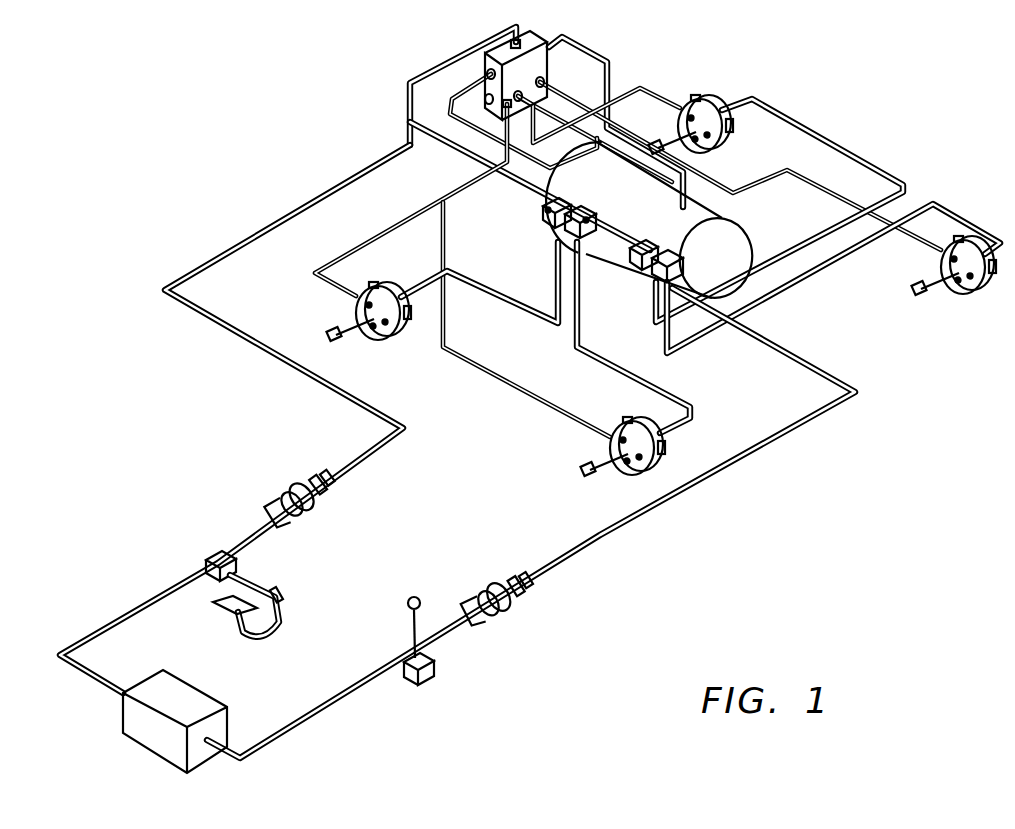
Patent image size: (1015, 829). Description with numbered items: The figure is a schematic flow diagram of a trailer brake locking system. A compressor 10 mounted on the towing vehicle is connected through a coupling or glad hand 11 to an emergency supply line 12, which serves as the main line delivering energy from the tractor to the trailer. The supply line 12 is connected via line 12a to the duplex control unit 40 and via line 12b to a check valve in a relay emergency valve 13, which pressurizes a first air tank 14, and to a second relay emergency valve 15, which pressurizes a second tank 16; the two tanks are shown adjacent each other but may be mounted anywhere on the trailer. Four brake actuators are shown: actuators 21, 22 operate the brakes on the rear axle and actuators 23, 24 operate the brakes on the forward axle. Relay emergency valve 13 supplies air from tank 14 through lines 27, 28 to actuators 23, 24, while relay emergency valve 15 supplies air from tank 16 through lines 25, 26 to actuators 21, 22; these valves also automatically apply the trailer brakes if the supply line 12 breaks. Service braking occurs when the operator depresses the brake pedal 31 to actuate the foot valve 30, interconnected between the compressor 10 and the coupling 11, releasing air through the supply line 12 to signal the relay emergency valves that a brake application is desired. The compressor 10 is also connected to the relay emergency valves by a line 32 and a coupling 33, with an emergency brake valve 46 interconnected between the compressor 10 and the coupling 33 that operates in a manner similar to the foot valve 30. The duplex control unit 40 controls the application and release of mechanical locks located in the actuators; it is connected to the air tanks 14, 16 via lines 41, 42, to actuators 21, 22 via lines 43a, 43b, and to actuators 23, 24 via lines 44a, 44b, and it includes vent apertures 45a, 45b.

The compressor 10 is at (176, 705).
The coupling 11 is at (321, 496).
The emergency supply line 12 is at (402, 427).
The line 12a is at (407, 109).
The line 12b is at (470, 152).
The relay emergency valve 13 is at (551, 232).
The first air tank 14 is at (611, 187).
The second relay emergency valve 15 is at (648, 288).
The second tank 16 is at (729, 249).
The brake actuator 21 is at (959, 294).
The brake actuator 22 is at (726, 95).
The brake actuator 23 is at (626, 472).
The brake actuator 24 is at (386, 338).
The line 25 is at (816, 271).
The line 26 is at (765, 243).
The line 27 is at (615, 367).
The line 28 is at (503, 299).
The foot valve 30 is at (209, 556).
The brake pedal 31 is at (224, 607).
The line 32 is at (624, 519).
The coupling 33 is at (499, 579).
The duplex control unit 40 is at (481, 58).
The line 41 is at (450, 107).
The line 42 is at (601, 58).
The line 43a is at (759, 181).
The line 43b is at (656, 96).
The line 44a is at (541, 399).
The line 44b is at (402, 218).
The vent aperture 45a is at (484, 96).
The vent aperture 45b is at (546, 73).
The emergency brake valve 46 is at (433, 673).